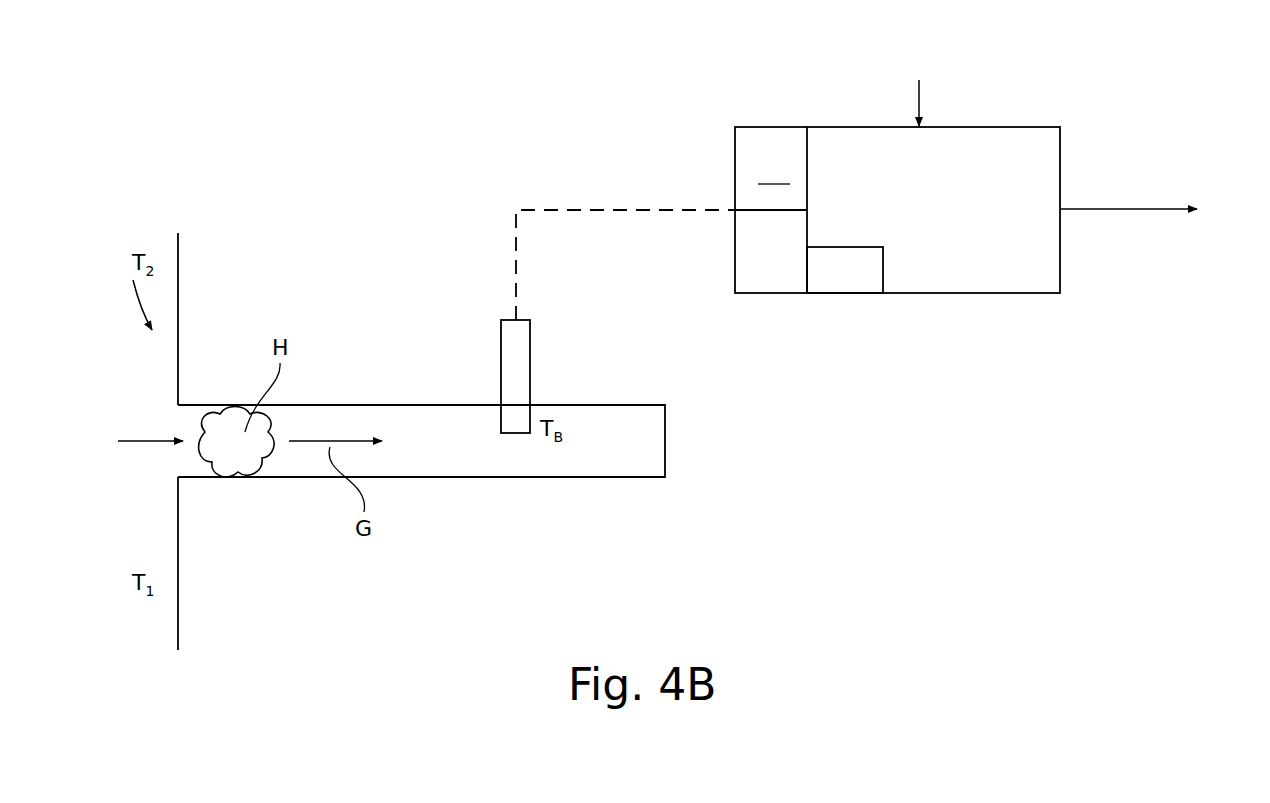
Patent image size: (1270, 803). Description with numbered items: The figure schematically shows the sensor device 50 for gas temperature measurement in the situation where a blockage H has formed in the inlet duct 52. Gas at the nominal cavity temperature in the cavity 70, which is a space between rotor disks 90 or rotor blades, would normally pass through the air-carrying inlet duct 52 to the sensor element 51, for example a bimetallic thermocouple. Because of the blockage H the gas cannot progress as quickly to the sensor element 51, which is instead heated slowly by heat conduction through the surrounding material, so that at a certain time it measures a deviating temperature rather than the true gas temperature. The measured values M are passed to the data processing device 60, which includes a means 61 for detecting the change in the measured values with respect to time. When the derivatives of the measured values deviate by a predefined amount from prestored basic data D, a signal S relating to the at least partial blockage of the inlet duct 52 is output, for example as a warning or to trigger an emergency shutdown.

The sensor device 50 is at (534, 160).
The sensor element 51 is at (527, 360).
The inlet duct 52 is at (428, 458).
The data processing device 60 is at (998, 163).
The means for detecting the change in the measured values with respect to time 61 is at (790, 272).
The cavity 70 is at (120, 385).
The rotor disk 90 is at (384, 276).